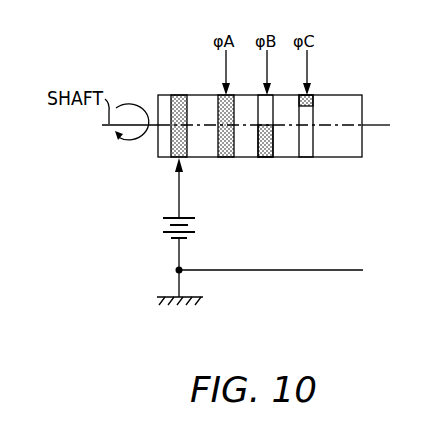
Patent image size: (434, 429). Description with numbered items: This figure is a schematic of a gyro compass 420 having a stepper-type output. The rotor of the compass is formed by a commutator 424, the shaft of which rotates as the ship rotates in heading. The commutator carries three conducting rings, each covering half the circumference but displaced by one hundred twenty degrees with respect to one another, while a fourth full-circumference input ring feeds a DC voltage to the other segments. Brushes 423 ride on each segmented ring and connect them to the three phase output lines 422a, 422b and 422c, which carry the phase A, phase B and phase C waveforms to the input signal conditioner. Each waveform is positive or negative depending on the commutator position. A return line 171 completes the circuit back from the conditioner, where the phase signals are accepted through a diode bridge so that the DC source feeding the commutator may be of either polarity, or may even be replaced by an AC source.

The gyro compass 420 is at (357, 202).
The commutator 424 is at (176, 95).
The phase line 422a is at (226, 58).
The phase line 422b is at (265, 63).
The phase line 422c is at (303, 62).
The brushes 423 is at (229, 88).
The line 171 is at (238, 270).